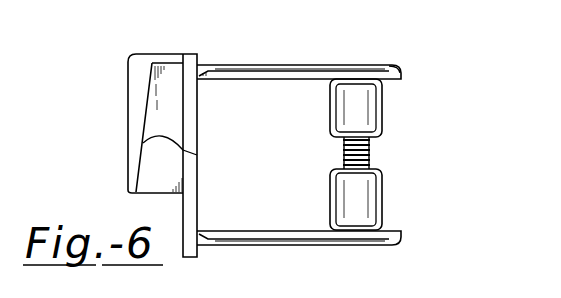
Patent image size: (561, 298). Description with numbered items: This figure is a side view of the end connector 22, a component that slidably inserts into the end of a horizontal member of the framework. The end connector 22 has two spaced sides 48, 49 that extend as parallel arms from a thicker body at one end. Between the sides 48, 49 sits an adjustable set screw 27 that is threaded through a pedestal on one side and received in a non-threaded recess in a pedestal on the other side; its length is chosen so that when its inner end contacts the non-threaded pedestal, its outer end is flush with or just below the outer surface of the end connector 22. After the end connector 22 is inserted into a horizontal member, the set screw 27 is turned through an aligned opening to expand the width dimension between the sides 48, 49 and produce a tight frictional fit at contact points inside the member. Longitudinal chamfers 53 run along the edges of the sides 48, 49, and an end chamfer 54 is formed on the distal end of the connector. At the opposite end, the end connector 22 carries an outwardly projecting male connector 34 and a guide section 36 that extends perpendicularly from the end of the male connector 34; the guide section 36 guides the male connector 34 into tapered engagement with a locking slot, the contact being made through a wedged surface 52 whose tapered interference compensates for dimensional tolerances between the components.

The end connector 22 is at (120, 61).
The adjustable set screw 27 is at (345, 155).
The male connector 34 is at (128, 193).
The guide section 36 is at (128, 95).
The side 48 is at (227, 65).
The side 49 is at (232, 245).
The wedged surface 52 is at (197, 155).
The longitudinal chamfer 53 is at (315, 67).
The end chamfer 54 is at (398, 65).